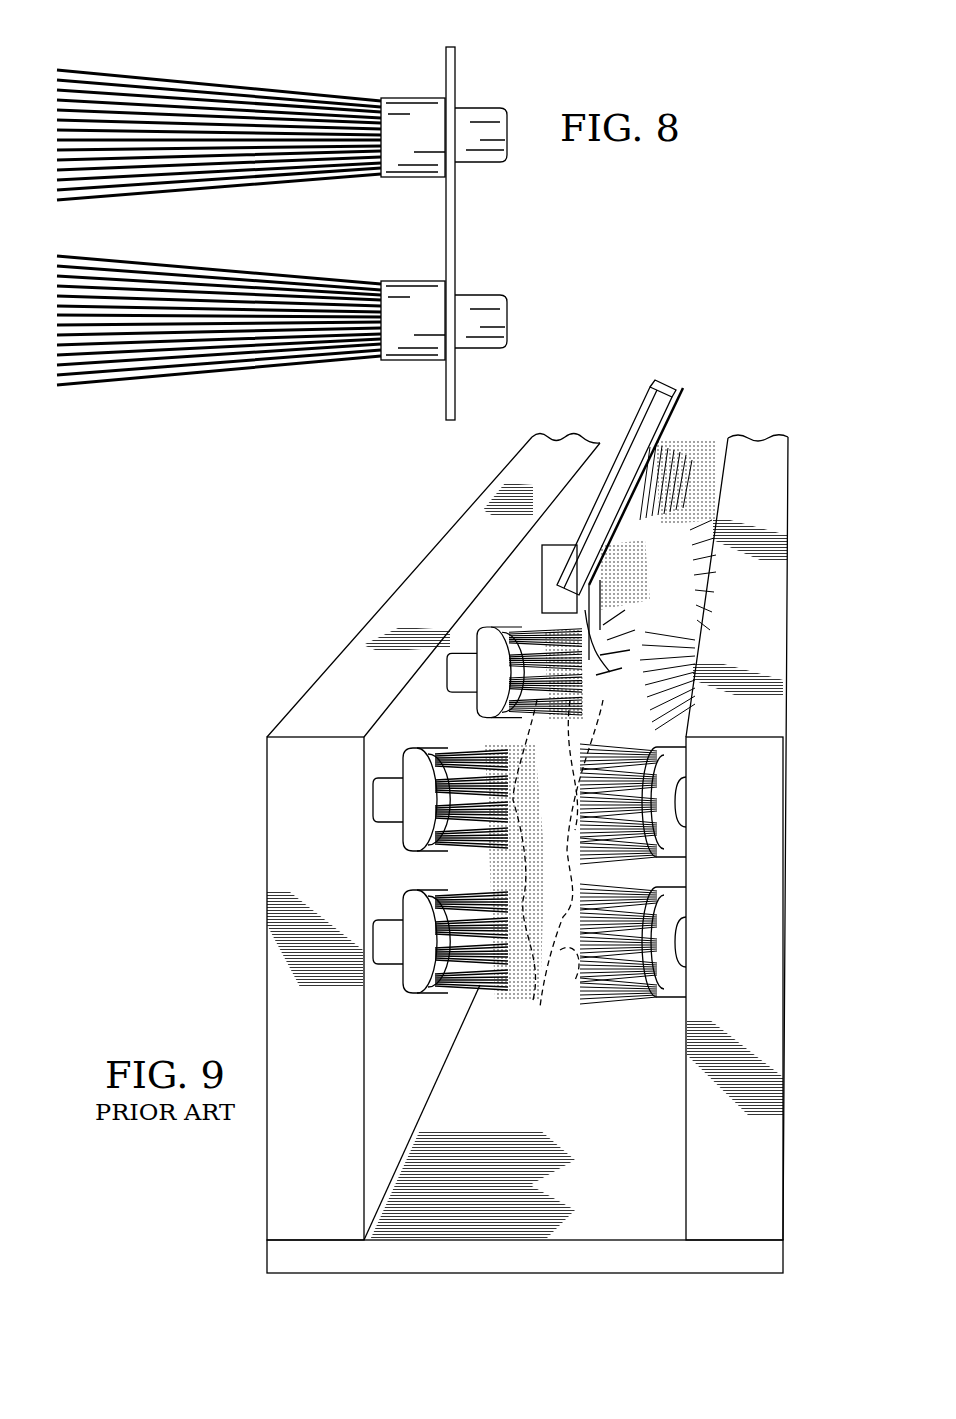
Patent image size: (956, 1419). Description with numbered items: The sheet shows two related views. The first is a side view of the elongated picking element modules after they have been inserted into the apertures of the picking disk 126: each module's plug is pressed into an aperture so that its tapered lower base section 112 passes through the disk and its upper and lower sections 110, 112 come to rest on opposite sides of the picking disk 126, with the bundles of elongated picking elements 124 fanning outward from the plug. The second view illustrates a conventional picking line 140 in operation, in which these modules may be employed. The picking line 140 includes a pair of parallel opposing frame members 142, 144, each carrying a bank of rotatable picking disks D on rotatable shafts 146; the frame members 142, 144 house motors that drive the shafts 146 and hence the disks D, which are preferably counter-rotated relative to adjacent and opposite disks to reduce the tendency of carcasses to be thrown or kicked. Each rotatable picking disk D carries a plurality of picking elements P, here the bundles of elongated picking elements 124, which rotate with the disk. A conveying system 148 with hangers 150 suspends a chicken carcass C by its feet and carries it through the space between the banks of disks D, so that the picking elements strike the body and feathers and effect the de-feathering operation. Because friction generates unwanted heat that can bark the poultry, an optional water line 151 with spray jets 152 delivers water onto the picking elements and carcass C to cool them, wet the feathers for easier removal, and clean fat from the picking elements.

In FIG. 8, the upper section of plug 110 is at (398, 88).
In FIG. 8, the lower base section of plug 112 is at (491, 99).
In FIG. 8, the bundles of elongated picking elements 124 is at (183, 72).
In FIG. 8, the picking disk 126 is at (455, 228).
In FIG. 9, the picking line 140 is at (309, 627).
In FIG. 9, the frame member 142 is at (335, 1195).
In FIG. 9, the frame member 144 is at (752, 1195).
In FIG. 9, the rotatable shafts 146 is at (678, 942).
In FIG. 9, the conveying system 148 is at (560, 567).
In FIG. 9, the hangers 150 is at (600, 598).
In FIG. 9, the water line 151 is at (683, 396).
In FIG. 9, the spray jets 152 is at (630, 618).
In FIG. 9, the picking elements P is at (477, 745).
In FIG. 9, the rotatable picking disks D is at (433, 922).
In FIG. 9, the chicken carcass C is at (568, 872).